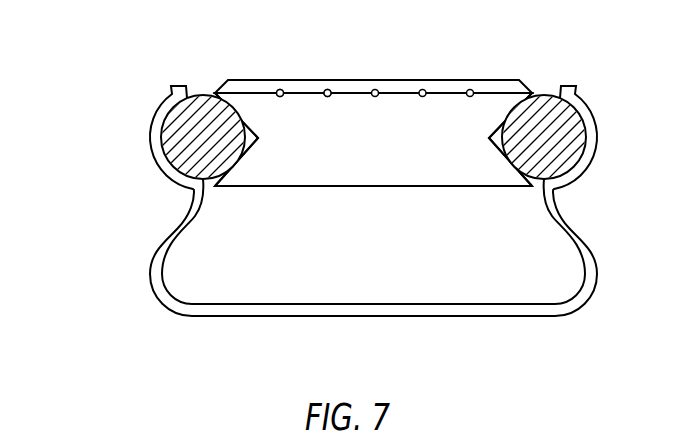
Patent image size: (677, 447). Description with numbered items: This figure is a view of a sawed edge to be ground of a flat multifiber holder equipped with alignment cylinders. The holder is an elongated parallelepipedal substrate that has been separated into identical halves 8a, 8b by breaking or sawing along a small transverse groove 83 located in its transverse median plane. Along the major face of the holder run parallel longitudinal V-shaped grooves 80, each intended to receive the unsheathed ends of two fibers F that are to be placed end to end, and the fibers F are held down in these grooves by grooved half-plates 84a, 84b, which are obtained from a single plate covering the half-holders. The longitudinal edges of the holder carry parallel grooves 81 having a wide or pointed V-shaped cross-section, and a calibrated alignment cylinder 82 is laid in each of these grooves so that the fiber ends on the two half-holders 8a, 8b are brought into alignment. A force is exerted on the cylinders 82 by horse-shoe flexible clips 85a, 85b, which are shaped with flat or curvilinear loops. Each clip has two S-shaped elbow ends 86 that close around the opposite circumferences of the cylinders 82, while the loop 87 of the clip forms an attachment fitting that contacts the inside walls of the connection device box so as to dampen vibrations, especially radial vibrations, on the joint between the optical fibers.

The half-holder 8a is at (373, 163).
The half-holder 8b is at (361, 172).
The longitudinal V-shaped groove 80 is at (280, 97).
The groove 81 is at (258, 138).
The calibrated cylinder 82 is at (193, 97).
The small transverse groove 83 is at (373, 163).
The half-plate 84a is at (373, 60).
The half-plate 84b is at (398, 88).
The horse-shoe flexible clip 85a is at (367, 232).
The horse-shoe flexible clip 85b is at (367, 232).
The S-shaped elbow end 86 is at (151, 132).
The loop 87 is at (597, 280).
The fiber F is at (281, 89).